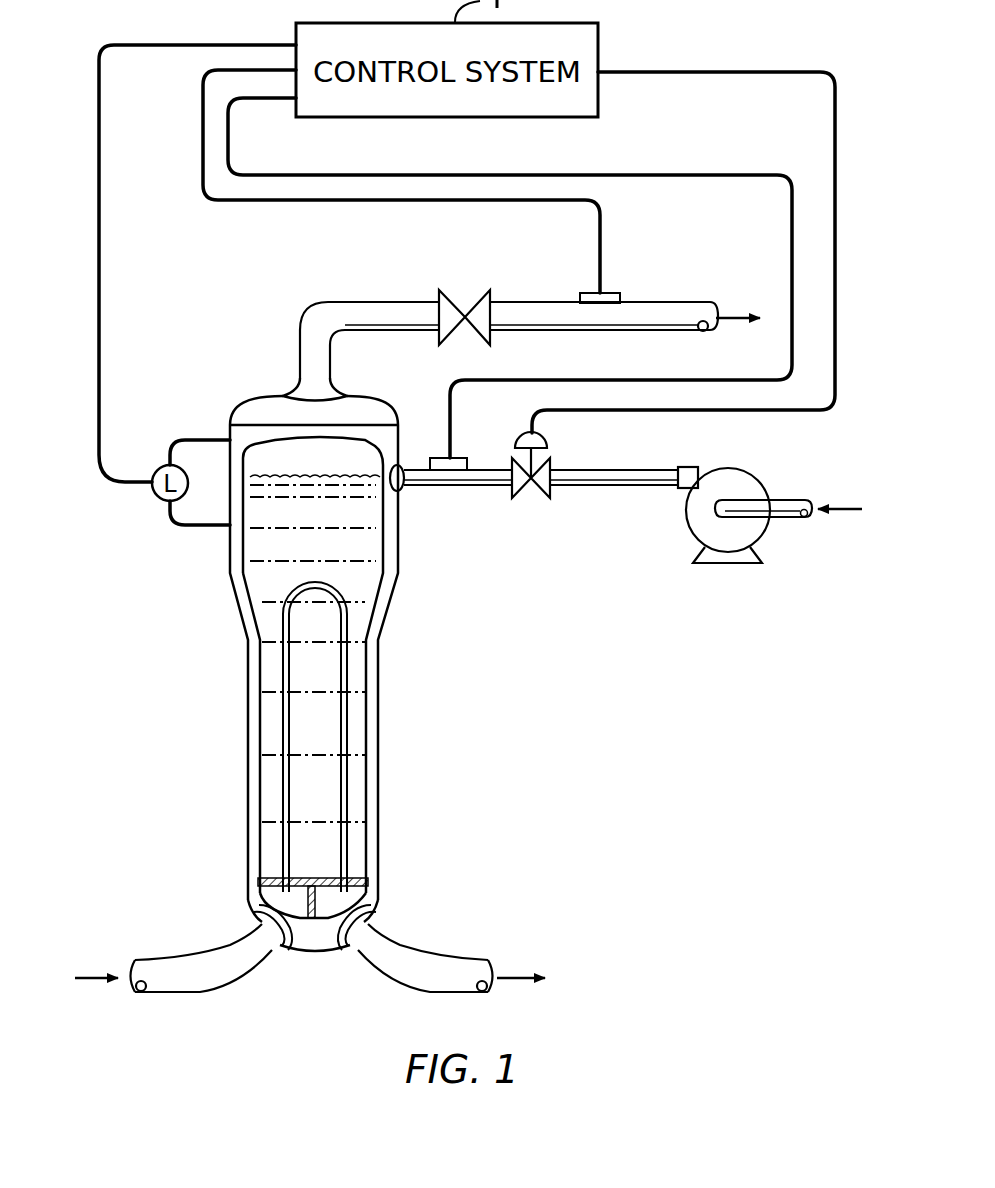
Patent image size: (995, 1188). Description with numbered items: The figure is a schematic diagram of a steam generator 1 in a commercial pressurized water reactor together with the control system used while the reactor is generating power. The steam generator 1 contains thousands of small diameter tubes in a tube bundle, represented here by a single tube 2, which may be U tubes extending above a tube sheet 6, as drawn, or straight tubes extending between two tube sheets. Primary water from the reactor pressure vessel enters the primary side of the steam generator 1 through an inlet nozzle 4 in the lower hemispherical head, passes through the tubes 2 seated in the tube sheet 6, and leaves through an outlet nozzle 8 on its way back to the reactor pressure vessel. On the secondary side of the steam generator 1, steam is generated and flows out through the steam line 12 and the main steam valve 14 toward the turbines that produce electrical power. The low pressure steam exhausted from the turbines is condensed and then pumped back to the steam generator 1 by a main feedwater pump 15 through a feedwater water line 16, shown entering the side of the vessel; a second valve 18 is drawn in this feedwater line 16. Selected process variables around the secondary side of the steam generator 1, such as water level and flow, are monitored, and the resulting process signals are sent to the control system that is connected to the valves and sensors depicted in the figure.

The steam generator 1 is at (198, 731).
The tube 2 is at (348, 662).
The inlet nozzle 4 is at (247, 940).
The tube sheet 6 is at (325, 878).
The outlet nozzle 8 is at (366, 938).
The steam line 12 is at (364, 300).
The main steam valve 14 is at (462, 290).
The main feedwater pump 15 is at (752, 476).
The feedwater water line 16 is at (592, 470).
The valve 18 is at (532, 498).